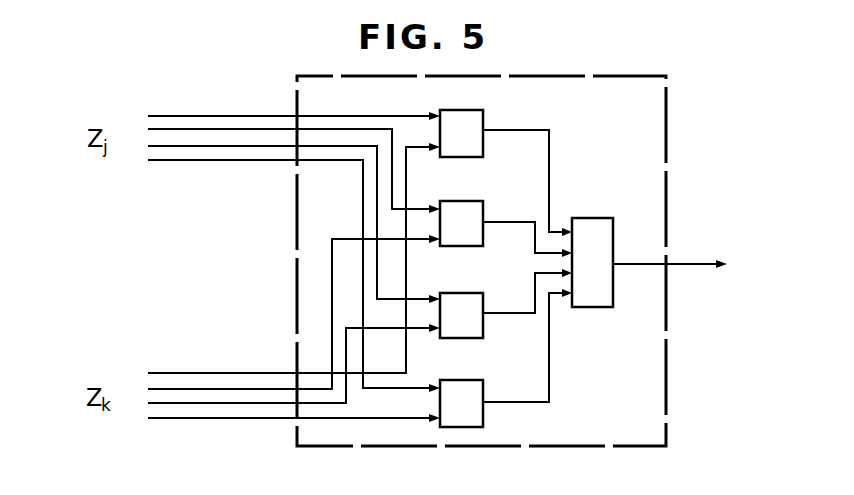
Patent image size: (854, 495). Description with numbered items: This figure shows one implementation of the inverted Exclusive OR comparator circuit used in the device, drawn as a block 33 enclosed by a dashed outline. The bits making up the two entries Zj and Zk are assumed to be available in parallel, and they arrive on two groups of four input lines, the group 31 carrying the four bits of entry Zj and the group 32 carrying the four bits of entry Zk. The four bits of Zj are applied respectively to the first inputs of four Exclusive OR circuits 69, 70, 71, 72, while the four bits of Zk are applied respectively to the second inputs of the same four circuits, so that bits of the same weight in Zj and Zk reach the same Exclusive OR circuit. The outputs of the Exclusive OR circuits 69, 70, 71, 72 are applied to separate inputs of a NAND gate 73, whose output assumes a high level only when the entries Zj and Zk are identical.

The first group of input lines Zj 31 is at (222, 92).
The second group of input lines Zk 32 is at (203, 353).
The comparator circuit block 33 is at (667, 100).
The Exclusive OR circuit 69 is at (484, 112).
The Exclusive OR circuit 70 is at (484, 204).
The Exclusive OR circuit 71 is at (484, 296).
The Exclusive OR circuit 72 is at (484, 383).
The NAND gate 73 is at (600, 217).